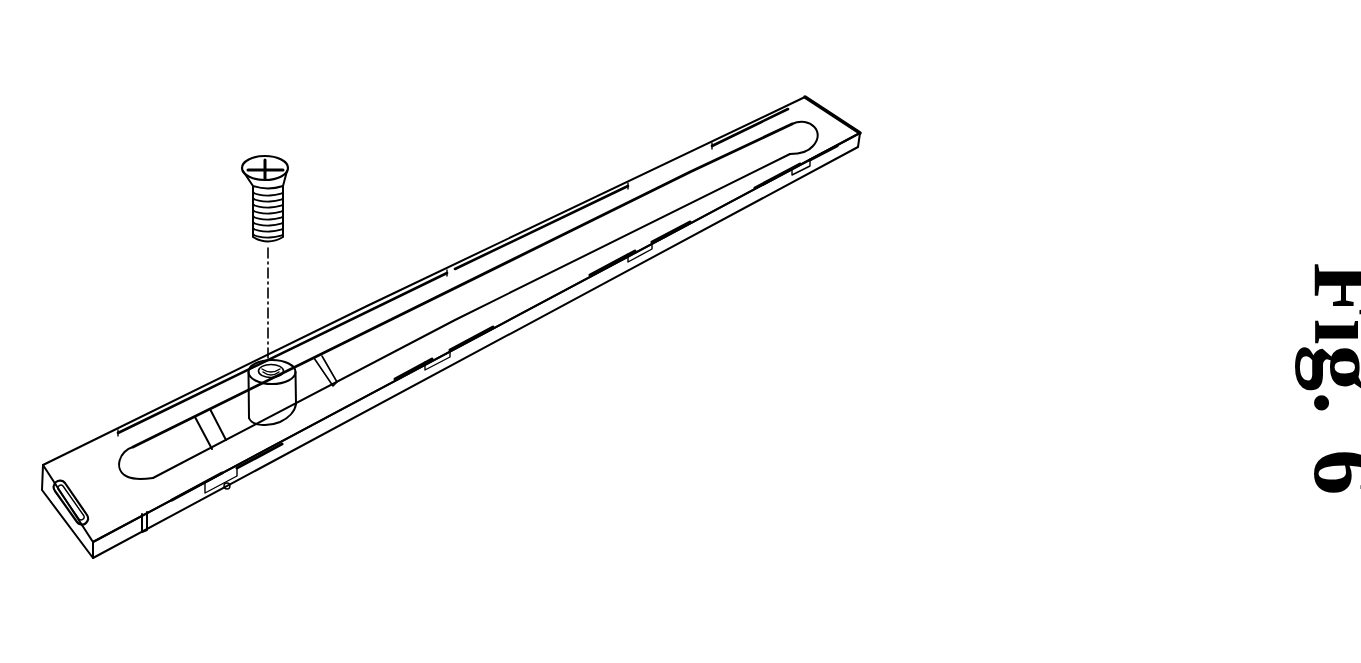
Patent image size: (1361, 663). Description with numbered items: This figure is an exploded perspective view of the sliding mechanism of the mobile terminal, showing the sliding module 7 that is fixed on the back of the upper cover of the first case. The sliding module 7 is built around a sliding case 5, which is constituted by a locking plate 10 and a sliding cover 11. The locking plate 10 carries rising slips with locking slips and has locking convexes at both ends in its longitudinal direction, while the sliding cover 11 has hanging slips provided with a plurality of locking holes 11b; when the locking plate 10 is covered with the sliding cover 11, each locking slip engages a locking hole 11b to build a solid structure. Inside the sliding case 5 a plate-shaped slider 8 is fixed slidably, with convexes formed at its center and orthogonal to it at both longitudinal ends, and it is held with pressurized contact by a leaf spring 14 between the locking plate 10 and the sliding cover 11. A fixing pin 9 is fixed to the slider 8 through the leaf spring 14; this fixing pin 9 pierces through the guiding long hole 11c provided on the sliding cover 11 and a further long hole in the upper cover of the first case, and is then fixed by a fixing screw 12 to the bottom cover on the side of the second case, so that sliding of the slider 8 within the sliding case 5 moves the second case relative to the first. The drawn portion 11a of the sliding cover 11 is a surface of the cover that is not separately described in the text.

The sliding case 5 is at (844, 107).
The sliding module 7 is at (584, 160).
The slider 8 is at (198, 425).
The fixing pin 9 is at (259, 397).
The locking plate 10 is at (137, 548).
The sliding cover 11 is at (508, 246).
The front wall 11a is at (386, 483).
The locking hole 11b is at (259, 565).
The guiding long hole 11c is at (455, 291).
The fixing screw 12 is at (285, 208).
The leaf spring 14 is at (323, 358).